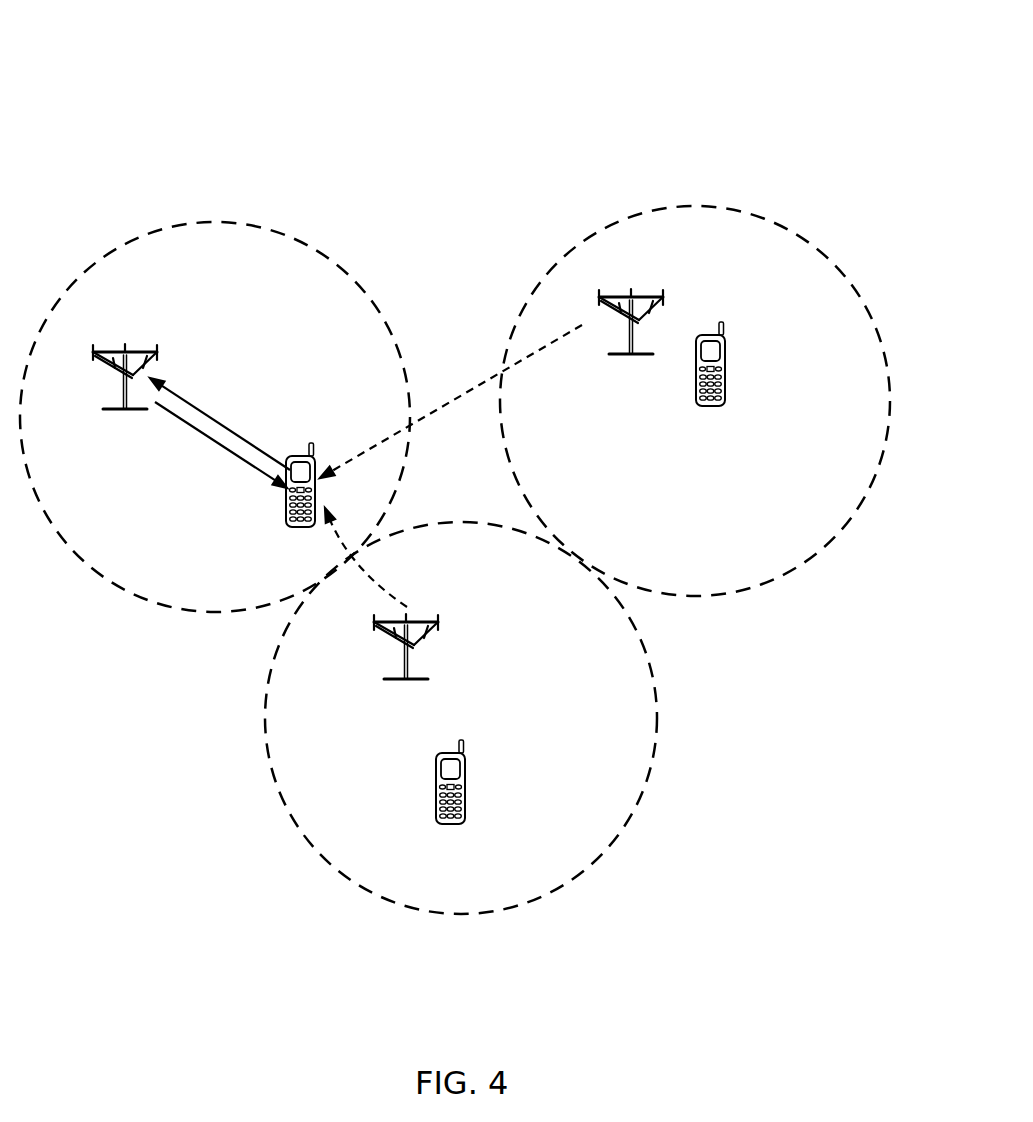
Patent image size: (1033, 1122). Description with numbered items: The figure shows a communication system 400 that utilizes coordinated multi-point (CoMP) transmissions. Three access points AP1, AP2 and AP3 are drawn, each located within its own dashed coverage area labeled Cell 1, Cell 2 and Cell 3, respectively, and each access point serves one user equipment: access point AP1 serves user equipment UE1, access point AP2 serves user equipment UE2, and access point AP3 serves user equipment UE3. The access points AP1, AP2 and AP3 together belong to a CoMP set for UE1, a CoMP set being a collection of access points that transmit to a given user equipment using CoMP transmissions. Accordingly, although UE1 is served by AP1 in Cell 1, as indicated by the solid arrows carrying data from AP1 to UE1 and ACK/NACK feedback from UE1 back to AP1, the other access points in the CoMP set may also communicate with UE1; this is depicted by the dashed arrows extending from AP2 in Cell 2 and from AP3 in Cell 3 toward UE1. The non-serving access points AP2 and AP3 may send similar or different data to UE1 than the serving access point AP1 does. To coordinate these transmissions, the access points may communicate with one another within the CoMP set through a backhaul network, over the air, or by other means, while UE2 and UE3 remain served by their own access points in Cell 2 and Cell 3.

The communication system 400 is at (666, 62).
The first cell Cell 1 is at (215, 414).
The second cell Cell 2 is at (695, 401).
The third cell Cell 3 is at (461, 723).
The access point AP1 is at (107, 399).
The access point AP2 is at (608, 339).
The access point AP3 is at (382, 660).
The user equipment UE1 is at (278, 501).
The user equipment UE2 is at (739, 364).
The user equipment UE3 is at (480, 782).